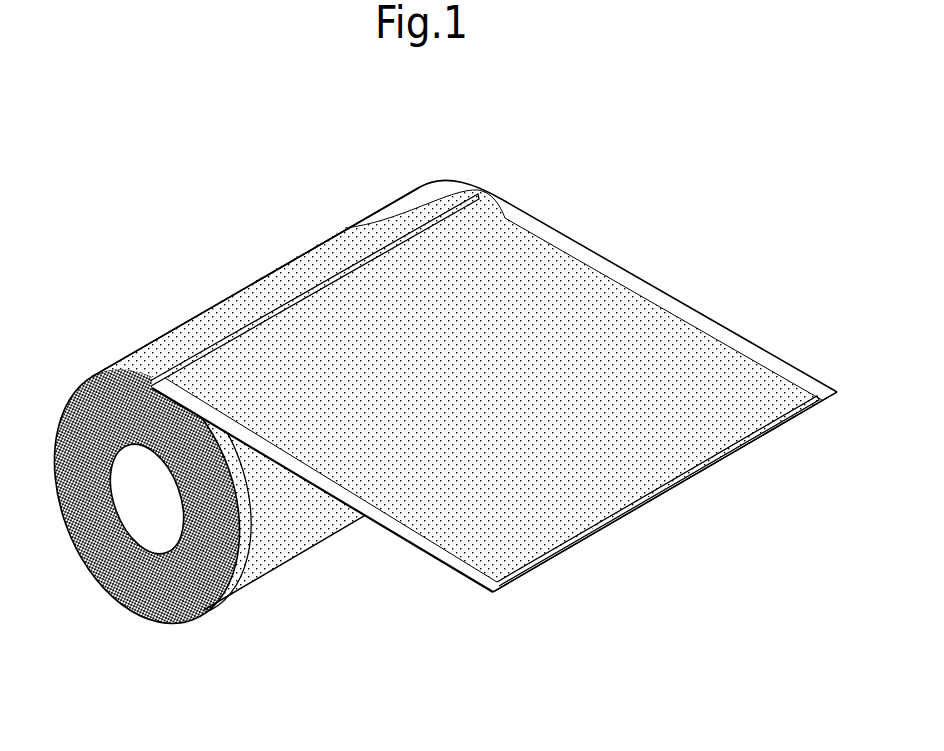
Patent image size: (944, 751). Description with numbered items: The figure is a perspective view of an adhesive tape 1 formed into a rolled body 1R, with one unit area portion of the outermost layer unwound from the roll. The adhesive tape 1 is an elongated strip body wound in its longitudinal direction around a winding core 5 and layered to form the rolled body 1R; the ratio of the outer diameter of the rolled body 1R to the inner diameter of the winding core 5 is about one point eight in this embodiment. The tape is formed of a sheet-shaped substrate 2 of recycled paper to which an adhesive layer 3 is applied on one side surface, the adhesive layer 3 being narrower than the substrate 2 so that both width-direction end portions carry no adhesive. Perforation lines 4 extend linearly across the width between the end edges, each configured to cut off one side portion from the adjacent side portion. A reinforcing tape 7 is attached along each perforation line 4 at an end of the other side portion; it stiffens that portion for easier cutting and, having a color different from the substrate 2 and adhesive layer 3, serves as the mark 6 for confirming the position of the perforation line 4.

The adhesive tape 1 is at (465, 404).
The rolled body 1R is at (73, 423).
The substrate 2 is at (657, 295).
The adhesive layer 3 is at (572, 297).
The perforation line 4 is at (455, 203).
The winding core 5 is at (138, 505).
The mark 6 is at (395, 240).
The reinforcing tape 7 is at (770, 427).